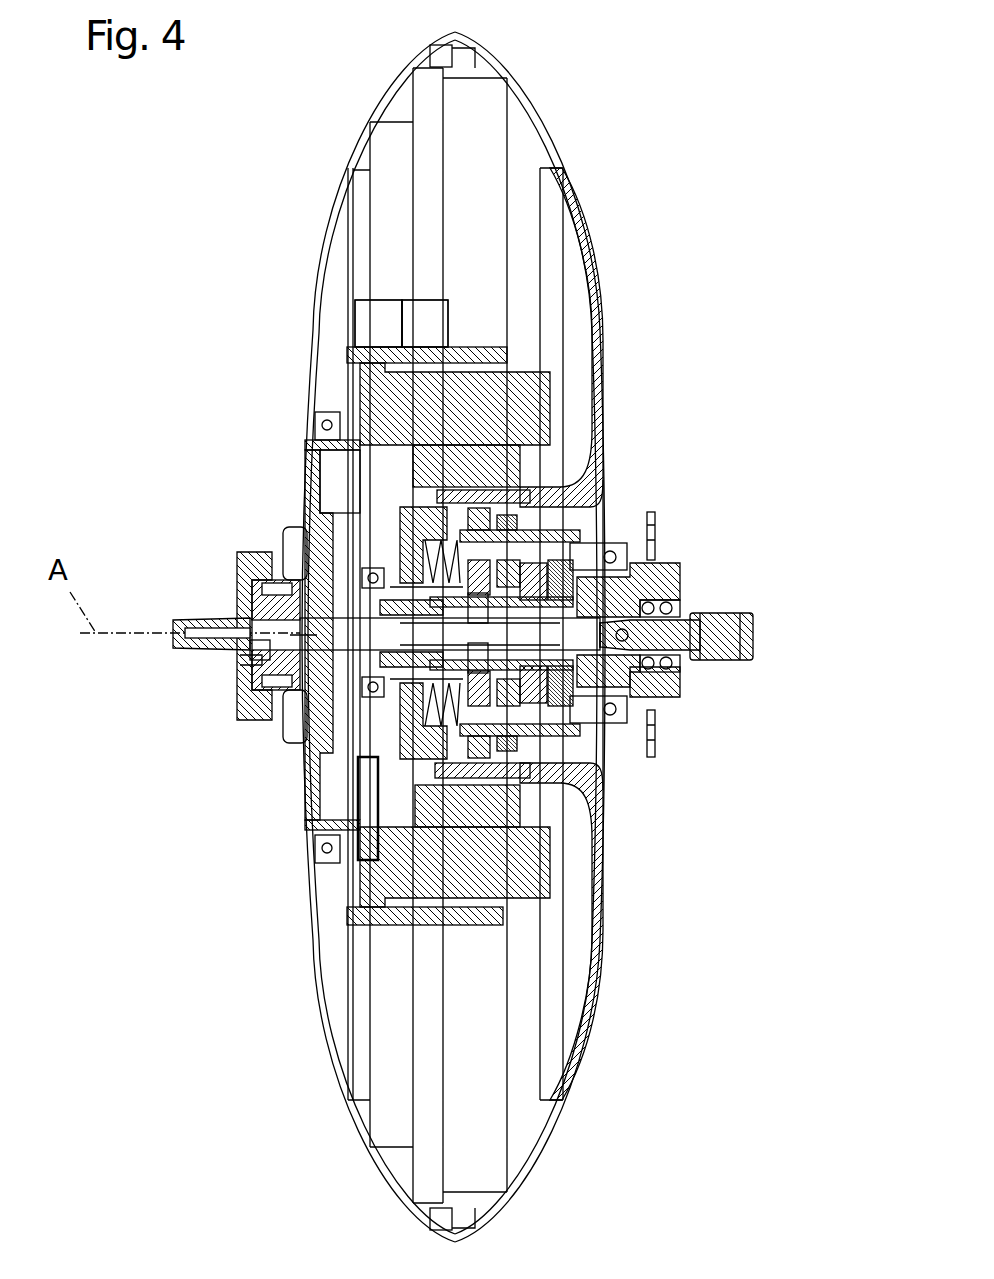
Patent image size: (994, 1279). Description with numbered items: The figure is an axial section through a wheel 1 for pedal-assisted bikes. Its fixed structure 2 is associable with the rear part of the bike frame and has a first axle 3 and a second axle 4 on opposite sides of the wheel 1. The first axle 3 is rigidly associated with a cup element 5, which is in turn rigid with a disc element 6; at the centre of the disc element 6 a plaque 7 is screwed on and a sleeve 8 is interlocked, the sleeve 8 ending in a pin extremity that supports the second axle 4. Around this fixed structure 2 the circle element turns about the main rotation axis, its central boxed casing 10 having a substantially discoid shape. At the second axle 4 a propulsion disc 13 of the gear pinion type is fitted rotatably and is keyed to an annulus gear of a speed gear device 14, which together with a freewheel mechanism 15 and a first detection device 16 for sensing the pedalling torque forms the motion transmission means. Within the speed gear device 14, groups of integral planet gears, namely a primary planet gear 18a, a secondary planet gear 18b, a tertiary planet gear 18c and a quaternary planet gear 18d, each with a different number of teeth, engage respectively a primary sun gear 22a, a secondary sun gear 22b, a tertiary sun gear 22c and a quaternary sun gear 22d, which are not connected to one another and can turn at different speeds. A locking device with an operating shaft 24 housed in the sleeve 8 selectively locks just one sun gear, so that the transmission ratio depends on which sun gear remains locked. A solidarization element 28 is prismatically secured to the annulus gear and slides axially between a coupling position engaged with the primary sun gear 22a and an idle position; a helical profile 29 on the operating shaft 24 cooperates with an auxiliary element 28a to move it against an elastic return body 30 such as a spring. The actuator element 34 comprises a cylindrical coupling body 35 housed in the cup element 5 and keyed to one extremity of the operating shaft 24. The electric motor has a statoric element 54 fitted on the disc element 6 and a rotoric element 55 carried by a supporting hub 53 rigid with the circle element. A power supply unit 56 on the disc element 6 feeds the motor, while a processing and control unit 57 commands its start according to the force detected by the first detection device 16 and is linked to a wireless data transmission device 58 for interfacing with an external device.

The wheel 1 is at (585, 159).
The fixed structure 2 is at (292, 485).
The first axle 3 is at (193, 620).
The second axle 4 is at (753, 640).
The cup element 5 is at (277, 552).
The disc element 6 is at (302, 462).
The plaque 7 is at (302, 603).
The sleeve 8 is at (327, 680).
The central boxed casing 10 is at (525, 130).
The propulsion disc 13 is at (653, 527).
The speed gear device 14 is at (590, 700).
The freewheel mechanism 15 is at (370, 752).
The first detection device 16 is at (400, 508).
The primary planet gear 18a is at (567, 743).
The secondary planet gear 18b is at (533, 745).
The tertiary planet gear 18c is at (507, 745).
The quaternary planet gear 18d is at (478, 743).
The primary sun gear 22a is at (613, 570).
The secondary sun gear 22b is at (577, 560).
The tertiary sun gear 22c is at (557, 570).
The quaternary sun gear 22d is at (478, 578).
The operating shaft 24 is at (297, 642).
The solidarization element 28 is at (577, 583).
The auxiliary element 28a is at (607, 667).
The helical profile 29 is at (620, 623).
The elastic return body 30 is at (737, 617).
The actuator element 34 is at (248, 653).
The coupling body 35 is at (242, 657).
The supporting hub 53 is at (490, 470).
The statoric element 54 is at (528, 367).
The rotoric element 55 is at (480, 440).
The power supply unit 56 is at (335, 342).
The processing and control unit 57 is at (378, 305).
The wireless data transmission device 58 is at (415, 285).